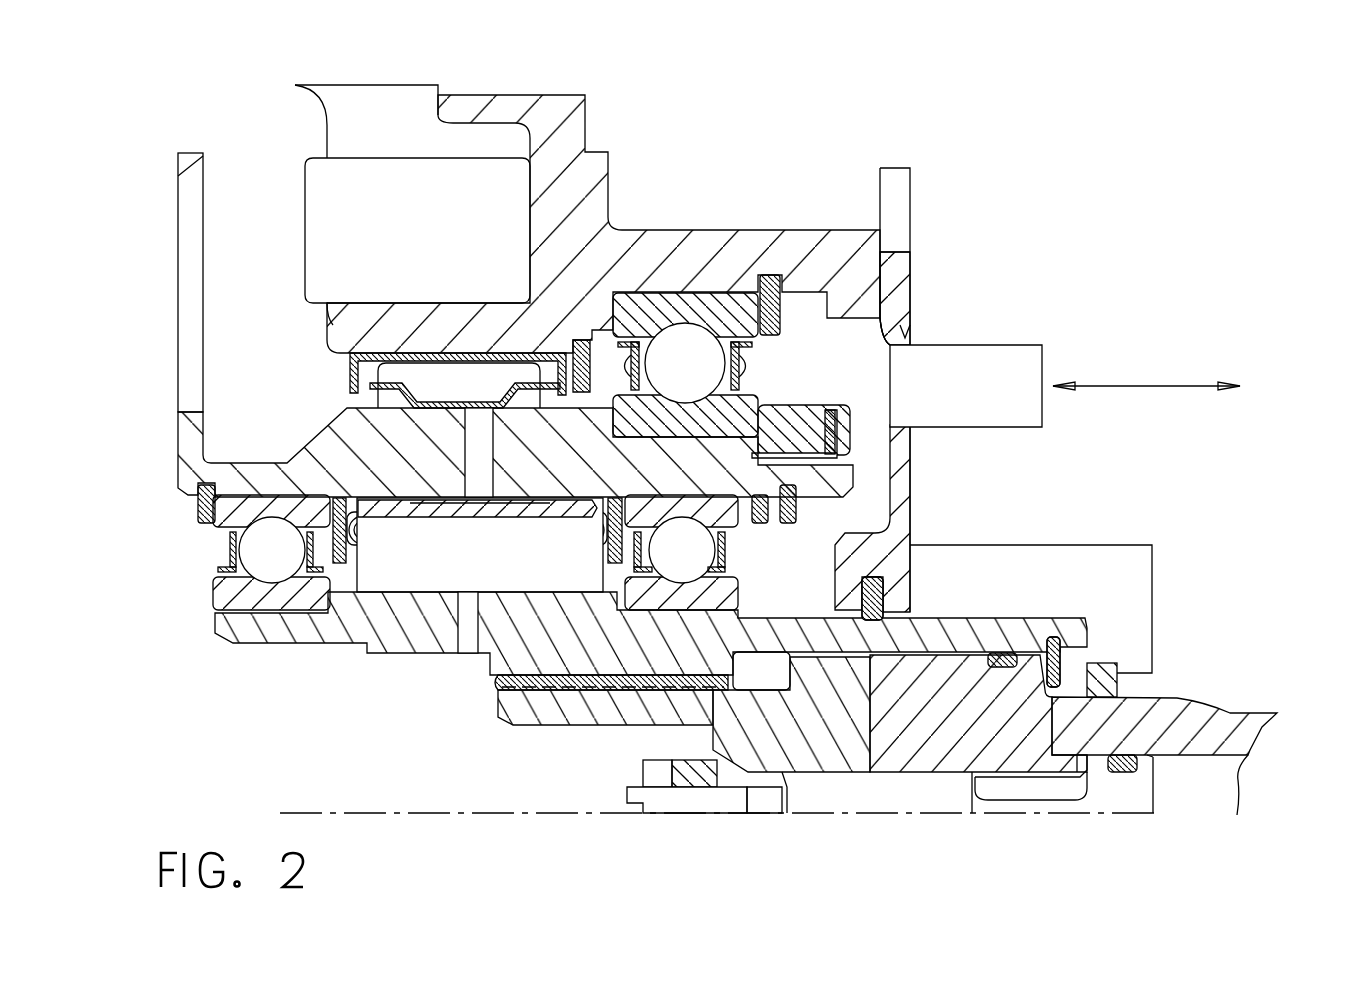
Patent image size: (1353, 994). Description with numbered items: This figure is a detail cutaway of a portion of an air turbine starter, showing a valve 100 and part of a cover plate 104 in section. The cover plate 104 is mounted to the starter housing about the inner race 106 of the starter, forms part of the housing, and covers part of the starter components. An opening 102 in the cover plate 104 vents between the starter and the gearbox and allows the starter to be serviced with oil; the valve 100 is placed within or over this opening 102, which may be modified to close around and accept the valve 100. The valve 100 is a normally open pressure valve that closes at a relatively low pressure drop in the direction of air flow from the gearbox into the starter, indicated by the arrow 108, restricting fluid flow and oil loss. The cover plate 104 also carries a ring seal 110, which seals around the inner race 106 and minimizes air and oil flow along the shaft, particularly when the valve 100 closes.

The fluid flow valve 100 is at (1005, 345).
The opening 102 is at (908, 332).
The cover plate 104 is at (910, 258).
The inner race 106 is at (1017, 618).
The arrow 108 is at (1148, 386).
The ring seal 110 is at (882, 572).